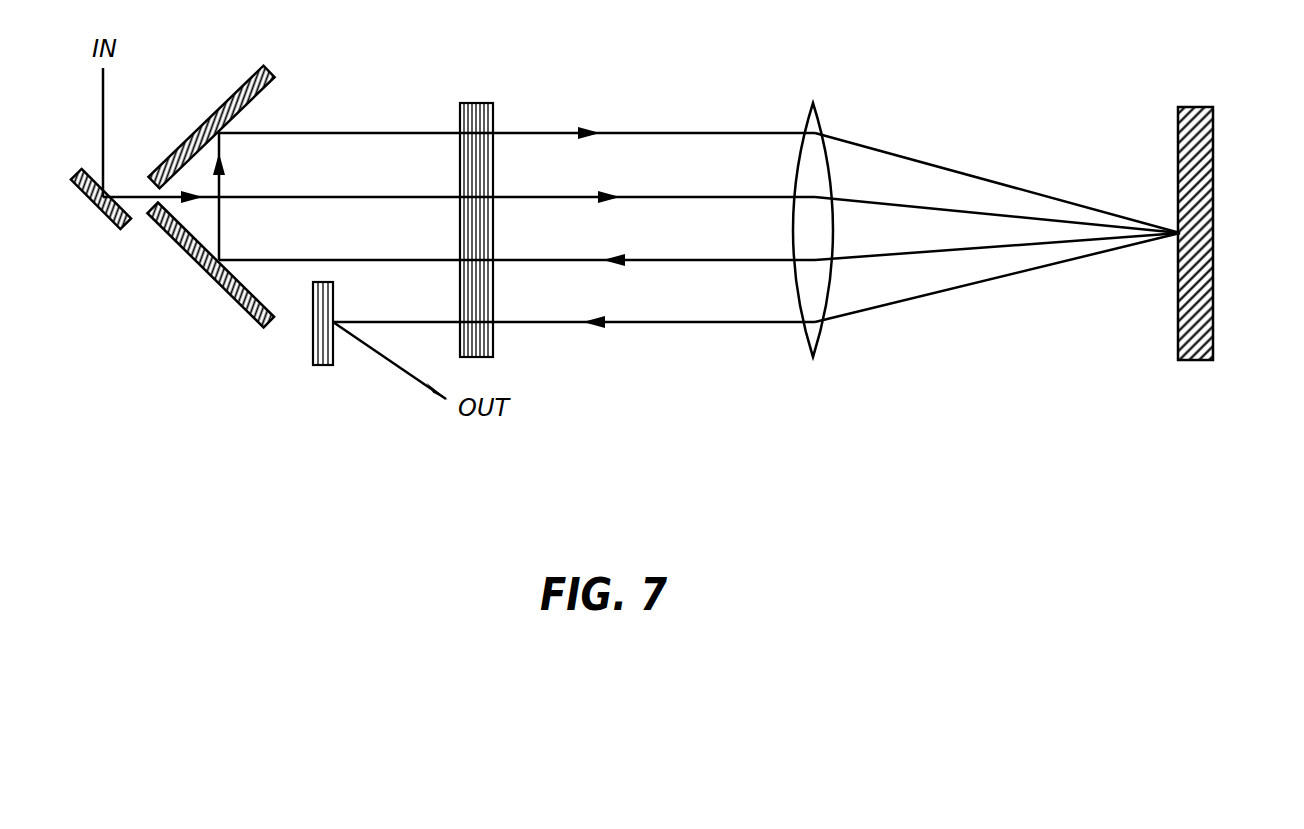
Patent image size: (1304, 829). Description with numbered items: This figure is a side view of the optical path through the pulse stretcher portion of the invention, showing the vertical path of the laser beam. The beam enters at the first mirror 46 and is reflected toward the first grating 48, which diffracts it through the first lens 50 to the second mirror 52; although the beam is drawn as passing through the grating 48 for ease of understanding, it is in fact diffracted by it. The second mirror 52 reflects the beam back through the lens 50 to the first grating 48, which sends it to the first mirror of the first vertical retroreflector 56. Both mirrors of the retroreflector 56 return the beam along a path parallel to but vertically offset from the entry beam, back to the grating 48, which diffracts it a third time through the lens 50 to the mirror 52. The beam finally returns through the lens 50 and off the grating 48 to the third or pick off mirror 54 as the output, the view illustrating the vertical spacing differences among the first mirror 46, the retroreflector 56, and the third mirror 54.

The first mirror 46 is at (95, 207).
The first grating 48 is at (460, 117).
The first lens 50 is at (820, 127).
The second mirror 52 is at (1213, 155).
The third or pick off mirror 54 is at (313, 348).
The first vertical retroreflector 56 is at (232, 93).